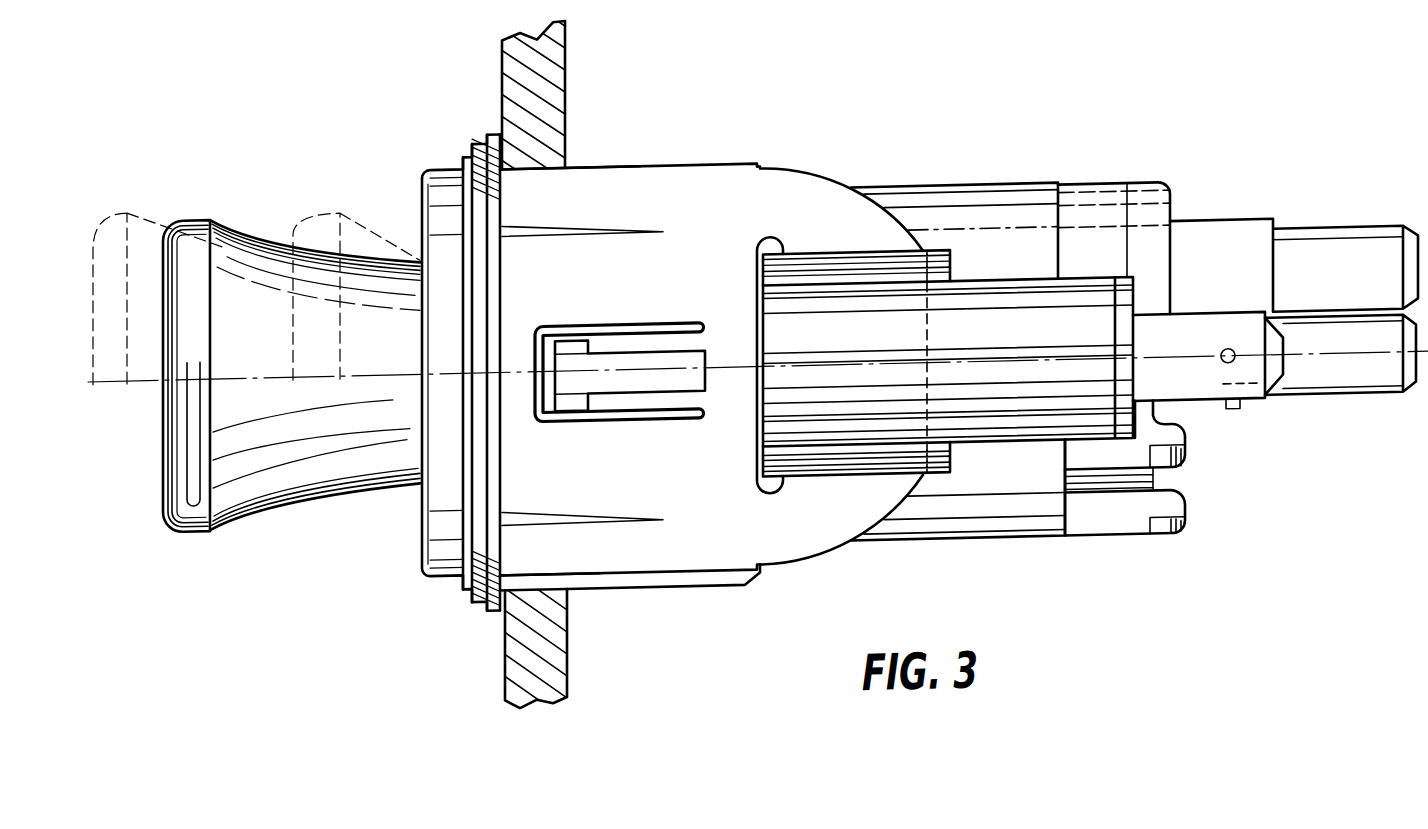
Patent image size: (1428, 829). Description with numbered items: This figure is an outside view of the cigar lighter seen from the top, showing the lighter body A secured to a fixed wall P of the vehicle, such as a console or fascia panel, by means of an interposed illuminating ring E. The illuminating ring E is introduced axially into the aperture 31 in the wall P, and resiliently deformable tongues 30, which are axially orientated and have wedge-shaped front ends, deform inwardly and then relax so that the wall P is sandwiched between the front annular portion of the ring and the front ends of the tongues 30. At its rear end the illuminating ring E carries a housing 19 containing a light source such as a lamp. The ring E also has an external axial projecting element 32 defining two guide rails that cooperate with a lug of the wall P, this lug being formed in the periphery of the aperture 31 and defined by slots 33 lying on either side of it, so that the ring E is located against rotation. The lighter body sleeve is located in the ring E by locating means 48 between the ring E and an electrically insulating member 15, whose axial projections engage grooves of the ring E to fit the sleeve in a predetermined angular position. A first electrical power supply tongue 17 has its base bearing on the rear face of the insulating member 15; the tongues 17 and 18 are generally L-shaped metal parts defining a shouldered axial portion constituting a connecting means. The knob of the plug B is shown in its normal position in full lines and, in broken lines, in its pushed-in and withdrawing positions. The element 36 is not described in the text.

The fixed wall P is at (548, 111).
The illuminating ring E is at (695, 176).
The lighter body A is at (860, 185).
The plug B is at (247, 528).
The aperture 31 is at (537, 186).
The resiliently deformable tongues 30 is at (653, 392).
The external axial projecting element 32 is at (717, 597).
The slots 33 is at (555, 600).
The housing 19 is at (1017, 444).
The electrically insulating member 15 is at (1158, 211).
The electrical power supply tongue 18 is at (1350, 293).
The first electrical power supply tongue 17 is at (1342, 391).
The shaft with pin hole 36 is at (1208, 406).
The locating means 48 is at (1176, 560).